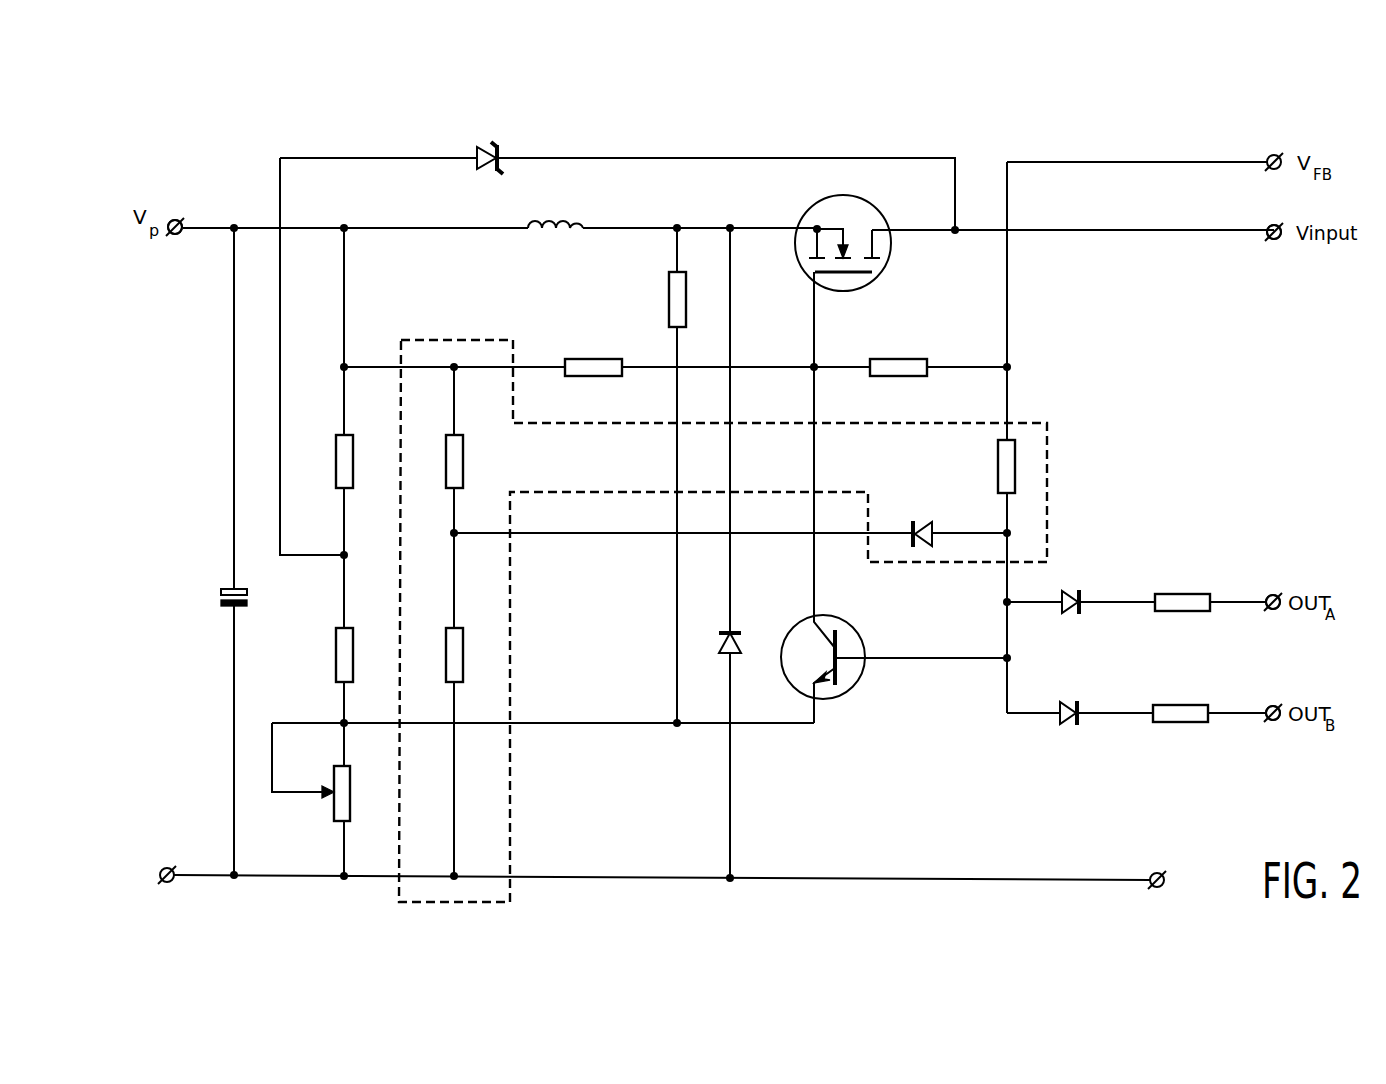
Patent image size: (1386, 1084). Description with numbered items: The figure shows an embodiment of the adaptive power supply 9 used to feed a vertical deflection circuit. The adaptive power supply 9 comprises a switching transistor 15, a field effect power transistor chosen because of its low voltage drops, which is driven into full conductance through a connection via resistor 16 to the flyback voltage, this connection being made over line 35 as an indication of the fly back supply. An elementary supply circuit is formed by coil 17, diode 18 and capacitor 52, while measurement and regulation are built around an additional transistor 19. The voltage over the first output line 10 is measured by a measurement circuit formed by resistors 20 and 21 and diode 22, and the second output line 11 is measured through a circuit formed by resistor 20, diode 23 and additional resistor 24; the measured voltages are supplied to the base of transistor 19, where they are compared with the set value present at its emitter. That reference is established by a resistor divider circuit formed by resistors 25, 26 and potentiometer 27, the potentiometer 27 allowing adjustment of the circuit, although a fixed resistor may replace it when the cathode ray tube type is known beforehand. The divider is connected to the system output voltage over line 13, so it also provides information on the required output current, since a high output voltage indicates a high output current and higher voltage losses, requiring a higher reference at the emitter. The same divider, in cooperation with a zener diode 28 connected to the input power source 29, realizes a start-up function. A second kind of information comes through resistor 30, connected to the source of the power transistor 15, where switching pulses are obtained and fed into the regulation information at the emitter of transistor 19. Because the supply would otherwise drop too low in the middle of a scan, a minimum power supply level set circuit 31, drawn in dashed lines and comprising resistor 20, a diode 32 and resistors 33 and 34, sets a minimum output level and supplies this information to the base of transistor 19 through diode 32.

The adaptive power supply 9 is at (968, 167).
The line 10 is at (1271, 592).
The line 11 is at (1268, 730).
The line 13 is at (176, 240).
The switching transistor 15 is at (889, 264).
The resistor 16 is at (897, 359).
The coil 17 is at (550, 236).
The diode 18 is at (740, 648).
The transistor 19 is at (858, 688).
The resistor 20 is at (998, 461).
The resistor 21 is at (1180, 594).
The diode 22 is at (1070, 590).
The diode 23 is at (1066, 727).
The additional resistor 24 is at (1178, 724).
The resistor 25 is at (336, 461).
The resistor 26 is at (336, 659).
The potentiometer 27 is at (333, 813).
The zener diode 28 is at (488, 172).
The input power source 29 is at (1280, 248).
The resistor 30 is at (668, 295).
The minimum power supply level set circuit 31 is at (512, 806).
The diode 32 is at (926, 523).
The resistor 33 is at (446, 466).
The resistor 34 is at (446, 660).
The line 35 is at (1145, 165).
The capacitor 52 is at (220, 600).